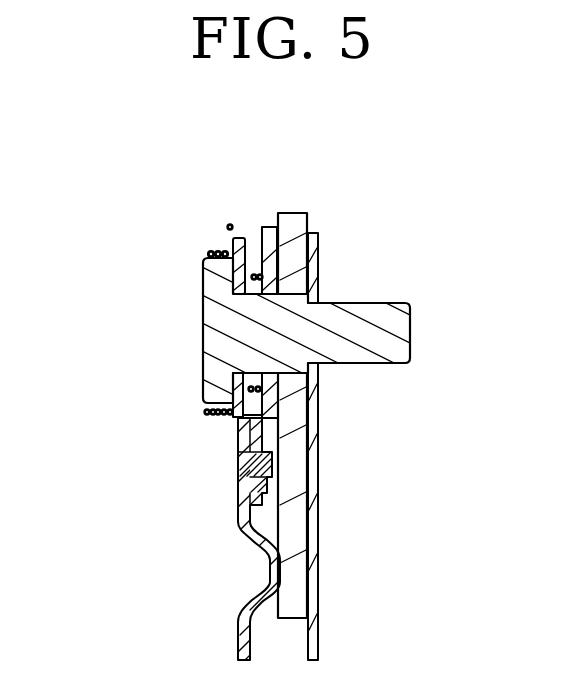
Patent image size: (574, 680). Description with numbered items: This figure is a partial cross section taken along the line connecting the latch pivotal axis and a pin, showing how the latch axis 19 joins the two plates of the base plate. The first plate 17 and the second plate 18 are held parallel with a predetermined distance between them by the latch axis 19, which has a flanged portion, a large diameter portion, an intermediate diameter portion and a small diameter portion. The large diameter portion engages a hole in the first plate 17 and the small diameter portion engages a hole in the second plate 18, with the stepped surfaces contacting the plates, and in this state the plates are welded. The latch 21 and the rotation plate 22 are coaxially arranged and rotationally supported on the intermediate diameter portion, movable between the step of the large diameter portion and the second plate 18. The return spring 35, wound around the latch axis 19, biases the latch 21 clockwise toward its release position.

The first plate 17 is at (241, 245).
The second plate 18 is at (315, 243).
The latch axis 19 is at (210, 328).
The latch 21 is at (293, 227).
The rotation plate 22 is at (270, 232).
The return spring 35 is at (243, 393).